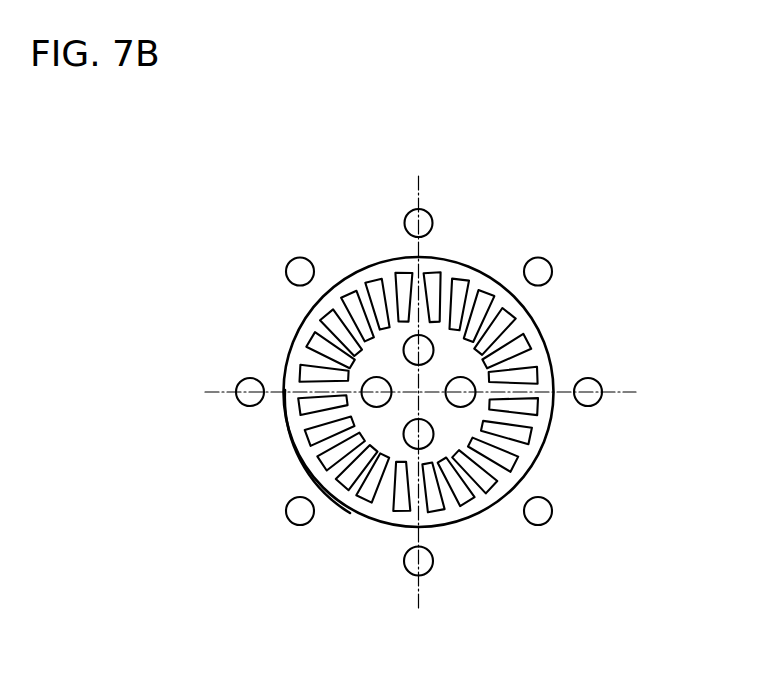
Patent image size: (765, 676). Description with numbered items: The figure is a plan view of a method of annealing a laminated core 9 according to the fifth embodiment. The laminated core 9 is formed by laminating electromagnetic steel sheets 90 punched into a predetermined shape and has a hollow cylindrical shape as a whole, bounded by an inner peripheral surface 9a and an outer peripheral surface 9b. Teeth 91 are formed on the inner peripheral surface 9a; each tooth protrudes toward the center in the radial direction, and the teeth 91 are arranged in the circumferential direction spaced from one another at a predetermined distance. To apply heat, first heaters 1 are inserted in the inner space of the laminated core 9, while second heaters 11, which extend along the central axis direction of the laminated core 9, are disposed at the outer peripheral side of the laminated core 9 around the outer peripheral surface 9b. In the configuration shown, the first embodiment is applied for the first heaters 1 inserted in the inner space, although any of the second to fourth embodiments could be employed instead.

The first heater 1 is at (406, 345).
The laminated core 9 is at (450, 408).
The inner peripheral surface 9a is at (431, 405).
The outer peripheral surface 9b is at (547, 343).
The second heater 11 is at (409, 213).
The electromagnetic steel sheet 90 is at (352, 508).
The tooth 91 is at (490, 454).